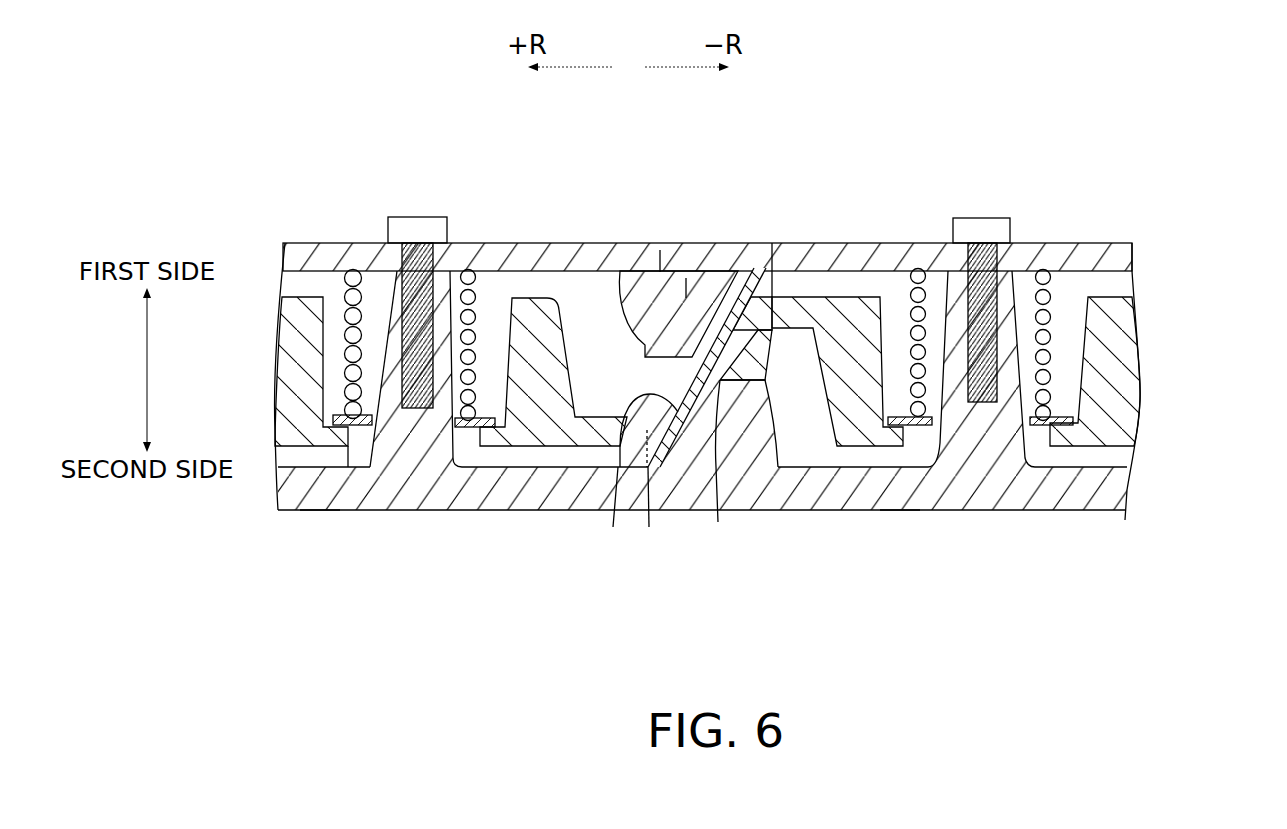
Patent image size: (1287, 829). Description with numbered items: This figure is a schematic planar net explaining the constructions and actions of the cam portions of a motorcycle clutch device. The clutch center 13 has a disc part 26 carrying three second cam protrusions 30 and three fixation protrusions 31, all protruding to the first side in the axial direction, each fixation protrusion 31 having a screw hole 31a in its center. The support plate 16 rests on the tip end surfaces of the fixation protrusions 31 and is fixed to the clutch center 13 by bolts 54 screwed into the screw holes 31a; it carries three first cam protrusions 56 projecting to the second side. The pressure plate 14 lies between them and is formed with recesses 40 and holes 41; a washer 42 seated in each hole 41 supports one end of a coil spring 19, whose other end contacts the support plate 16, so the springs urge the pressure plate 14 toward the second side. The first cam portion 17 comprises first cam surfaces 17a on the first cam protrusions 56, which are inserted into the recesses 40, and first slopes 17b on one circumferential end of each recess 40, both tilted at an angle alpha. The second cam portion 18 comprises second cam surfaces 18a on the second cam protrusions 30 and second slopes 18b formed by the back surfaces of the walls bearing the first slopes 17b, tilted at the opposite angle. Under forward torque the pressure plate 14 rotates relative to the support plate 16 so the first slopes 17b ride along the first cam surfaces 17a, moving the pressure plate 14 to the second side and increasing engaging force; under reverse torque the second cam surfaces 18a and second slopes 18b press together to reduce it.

The clutch center 13 is at (1140, 487).
The pressure plate 14 is at (1153, 362).
The support plate 16 is at (1115, 243).
The first cam portion 17 is at (663, 307).
The first cam surface 17a is at (710, 295).
The first slope 17b is at (626, 271).
The second cam portion 18 is at (620, 470).
The second cam surface 18a is at (663, 510).
The second slope 18b is at (717, 510).
The coil spring 19 is at (333, 310).
The disc part 26 is at (1123, 504).
The second cam protrusion 30 is at (762, 268).
The fixation protrusion 31 is at (455, 278).
The screw hole 31a is at (478, 272).
The recess 40 is at (627, 364).
The hole 41 is at (318, 297).
The washer 42 is at (318, 510).
The bolt 54 is at (423, 217).
The first cam protrusion 56 is at (645, 300).